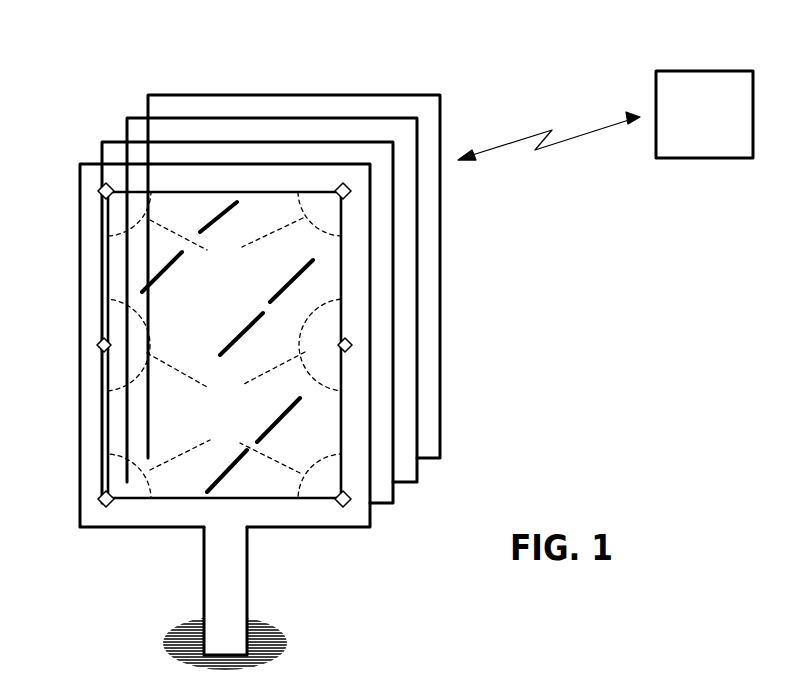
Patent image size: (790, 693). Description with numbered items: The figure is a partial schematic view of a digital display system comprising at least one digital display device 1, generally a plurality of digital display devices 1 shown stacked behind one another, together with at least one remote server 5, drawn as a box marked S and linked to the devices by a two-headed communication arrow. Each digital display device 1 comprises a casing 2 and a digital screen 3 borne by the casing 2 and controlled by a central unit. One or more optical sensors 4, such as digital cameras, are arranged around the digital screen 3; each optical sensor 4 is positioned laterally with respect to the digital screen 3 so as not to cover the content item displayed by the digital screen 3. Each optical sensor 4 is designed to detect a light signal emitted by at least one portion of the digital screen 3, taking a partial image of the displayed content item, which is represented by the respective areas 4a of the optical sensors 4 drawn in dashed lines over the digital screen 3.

The digital display device 1 is at (328, 95).
The casing 2 is at (149, 514).
The digital screen 3 is at (143, 407).
The optical sensor 4 is at (258, 371).
The area 4a is at (226, 345).
The remote server 5 is at (727, 68).